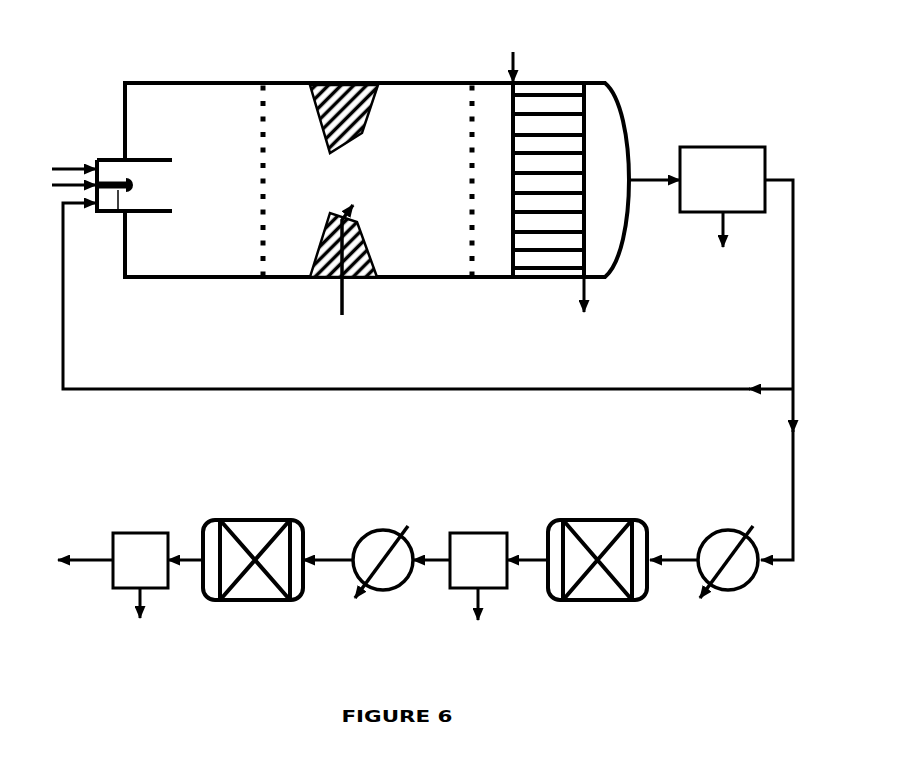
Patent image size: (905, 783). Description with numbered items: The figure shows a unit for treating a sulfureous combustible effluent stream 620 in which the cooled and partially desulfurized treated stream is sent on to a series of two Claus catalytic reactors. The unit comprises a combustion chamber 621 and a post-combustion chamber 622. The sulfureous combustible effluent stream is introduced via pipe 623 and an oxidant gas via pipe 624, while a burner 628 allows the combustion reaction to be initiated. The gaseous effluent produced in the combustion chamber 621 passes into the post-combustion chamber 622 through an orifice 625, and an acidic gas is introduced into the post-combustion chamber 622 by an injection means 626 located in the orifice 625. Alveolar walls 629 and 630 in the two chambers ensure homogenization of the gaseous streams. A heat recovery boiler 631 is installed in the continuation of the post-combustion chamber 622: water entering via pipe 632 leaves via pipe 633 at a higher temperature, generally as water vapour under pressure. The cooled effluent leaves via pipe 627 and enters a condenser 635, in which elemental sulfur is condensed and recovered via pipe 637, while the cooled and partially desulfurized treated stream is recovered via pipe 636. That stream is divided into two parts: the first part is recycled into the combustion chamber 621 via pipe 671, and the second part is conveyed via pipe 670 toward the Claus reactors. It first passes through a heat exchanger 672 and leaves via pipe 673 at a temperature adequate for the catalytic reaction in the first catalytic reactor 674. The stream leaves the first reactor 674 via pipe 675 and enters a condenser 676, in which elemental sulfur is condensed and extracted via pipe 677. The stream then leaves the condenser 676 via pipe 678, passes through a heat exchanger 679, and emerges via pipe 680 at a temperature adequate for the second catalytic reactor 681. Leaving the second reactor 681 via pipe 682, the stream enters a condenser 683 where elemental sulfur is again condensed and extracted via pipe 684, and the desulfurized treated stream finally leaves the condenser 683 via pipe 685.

The unit for treating the sulfureous combustible effluent stream 620 is at (108, 57).
The combustion chamber 621 is at (208, 125).
The post-combustion chamber 622 is at (447, 135).
The pipe 623 is at (76, 186).
The pipe 624 is at (69, 159).
The orifice 625 is at (345, 175).
The injection means 626 is at (344, 262).
The pipe 627 is at (653, 167).
The burner 628 is at (118, 212).
The alveolar wall 629 is at (258, 220).
The alveolar wall 630 is at (473, 220).
The heat recovery boiler 631 is at (568, 173).
The pipe 632 is at (513, 57).
The pipe 633 is at (584, 307).
The condenser 635 is at (720, 147).
The pipe 636 is at (785, 272).
The pipe 637 is at (725, 241).
The pipe 670 is at (795, 474).
The pipe 671 is at (428, 296).
The heat exchanger 672 is at (724, 530).
The pipe 673 is at (674, 549).
The first catalytic reactor 674 is at (592, 520).
The pipe 675 is at (527, 549).
The condenser 676 is at (474, 533).
The pipe 677 is at (479, 613).
The pipe 678 is at (431, 549).
The heat exchanger 679 is at (382, 530).
The pipe 680 is at (328, 548).
The second catalytic reactor 681 is at (246, 520).
The pipe 682 is at (185, 548).
The condenser 683 is at (140, 533).
The pipe 684 is at (141, 613).
The pipe 685 is at (67, 561).